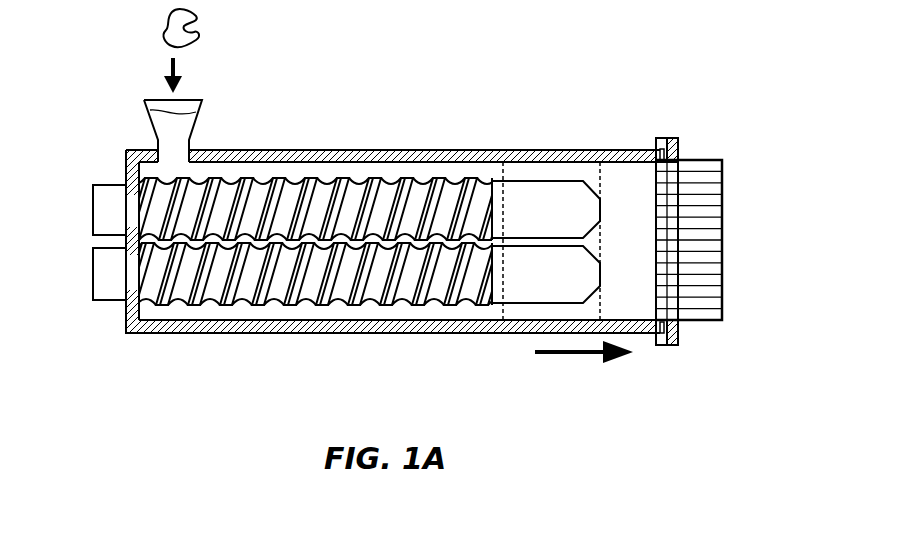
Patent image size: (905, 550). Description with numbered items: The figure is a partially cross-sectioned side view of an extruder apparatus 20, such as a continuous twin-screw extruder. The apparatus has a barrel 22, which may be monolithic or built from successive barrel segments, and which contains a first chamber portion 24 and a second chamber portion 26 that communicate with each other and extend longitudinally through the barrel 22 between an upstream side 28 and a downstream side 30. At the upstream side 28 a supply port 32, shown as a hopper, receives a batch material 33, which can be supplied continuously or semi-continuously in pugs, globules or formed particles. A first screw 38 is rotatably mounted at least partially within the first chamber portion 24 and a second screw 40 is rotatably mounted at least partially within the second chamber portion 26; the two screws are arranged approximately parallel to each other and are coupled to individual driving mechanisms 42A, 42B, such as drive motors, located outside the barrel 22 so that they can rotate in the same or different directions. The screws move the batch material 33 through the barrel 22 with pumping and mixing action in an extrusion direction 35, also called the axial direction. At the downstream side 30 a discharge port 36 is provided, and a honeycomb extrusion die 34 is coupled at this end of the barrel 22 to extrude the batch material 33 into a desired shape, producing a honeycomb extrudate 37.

The extruder apparatus 20 is at (411, 68).
The barrel 22 is at (217, 150).
The first chamber portion 24 is at (353, 170).
The second chamber portion 26 is at (318, 311).
The upstream side 28 is at (144, 341).
The downstream side 30 is at (646, 140).
The supply port 32 is at (150, 118).
The batch material 33 is at (196, 18).
The honeycomb extrusion die 34 is at (680, 180).
The extrusion direction 35 is at (574, 356).
The discharge port 36 is at (640, 190).
The honeycomb extrudate 37 is at (722, 218).
The first screw 38 is at (419, 176).
The second screw 40 is at (425, 313).
The driving mechanism 42A is at (108, 185).
The driving mechanism 42B is at (110, 300).